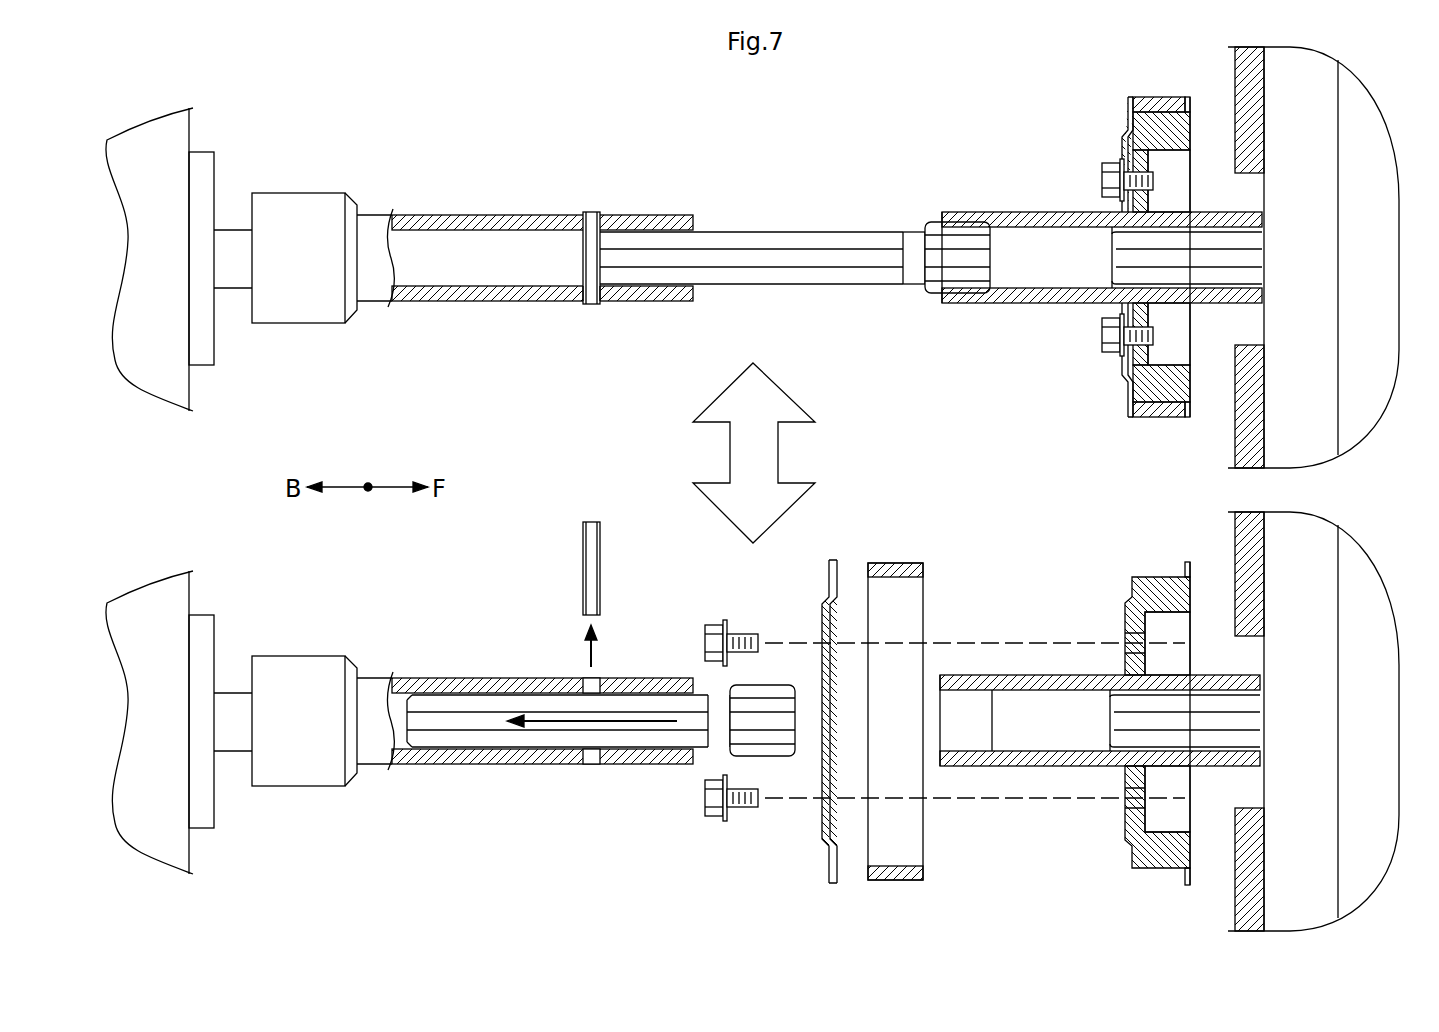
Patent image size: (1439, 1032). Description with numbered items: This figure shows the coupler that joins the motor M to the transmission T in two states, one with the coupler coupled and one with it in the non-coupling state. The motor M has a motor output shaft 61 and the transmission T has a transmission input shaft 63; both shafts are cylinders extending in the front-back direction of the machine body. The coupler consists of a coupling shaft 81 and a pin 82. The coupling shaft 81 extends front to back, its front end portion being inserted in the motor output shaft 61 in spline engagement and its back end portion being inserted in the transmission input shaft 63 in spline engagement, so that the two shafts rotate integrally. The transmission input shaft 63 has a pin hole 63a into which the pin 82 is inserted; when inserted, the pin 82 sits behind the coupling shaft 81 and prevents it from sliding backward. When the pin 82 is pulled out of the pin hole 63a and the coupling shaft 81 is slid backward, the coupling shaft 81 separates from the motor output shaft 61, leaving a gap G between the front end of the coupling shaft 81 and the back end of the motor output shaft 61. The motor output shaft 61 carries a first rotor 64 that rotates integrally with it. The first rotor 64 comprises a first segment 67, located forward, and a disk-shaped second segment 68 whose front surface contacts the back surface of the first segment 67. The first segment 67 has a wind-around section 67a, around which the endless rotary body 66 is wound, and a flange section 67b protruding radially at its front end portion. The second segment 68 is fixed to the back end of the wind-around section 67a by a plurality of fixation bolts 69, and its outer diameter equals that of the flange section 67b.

The motor output shaft 61 is at (985, 300).
The transmission input shaft 63 is at (462, 215).
The pin hole 63a is at (600, 304).
The first rotor 64 is at (1118, 97).
The endless rotary body 66 is at (1150, 417).
The first segment 67 is at (1195, 128).
The wind-around section 67a is at (1158, 97).
The flange section 67b is at (1188, 97).
The second segment 68 is at (1122, 137).
The fixation bolts 69 is at (1102, 180).
The coupling shaft 81 is at (748, 232).
The pin 82 is at (591, 212).
The transmission T is at (150, 146).
The motor M is at (1370, 122).
The gap G is at (810, 748).